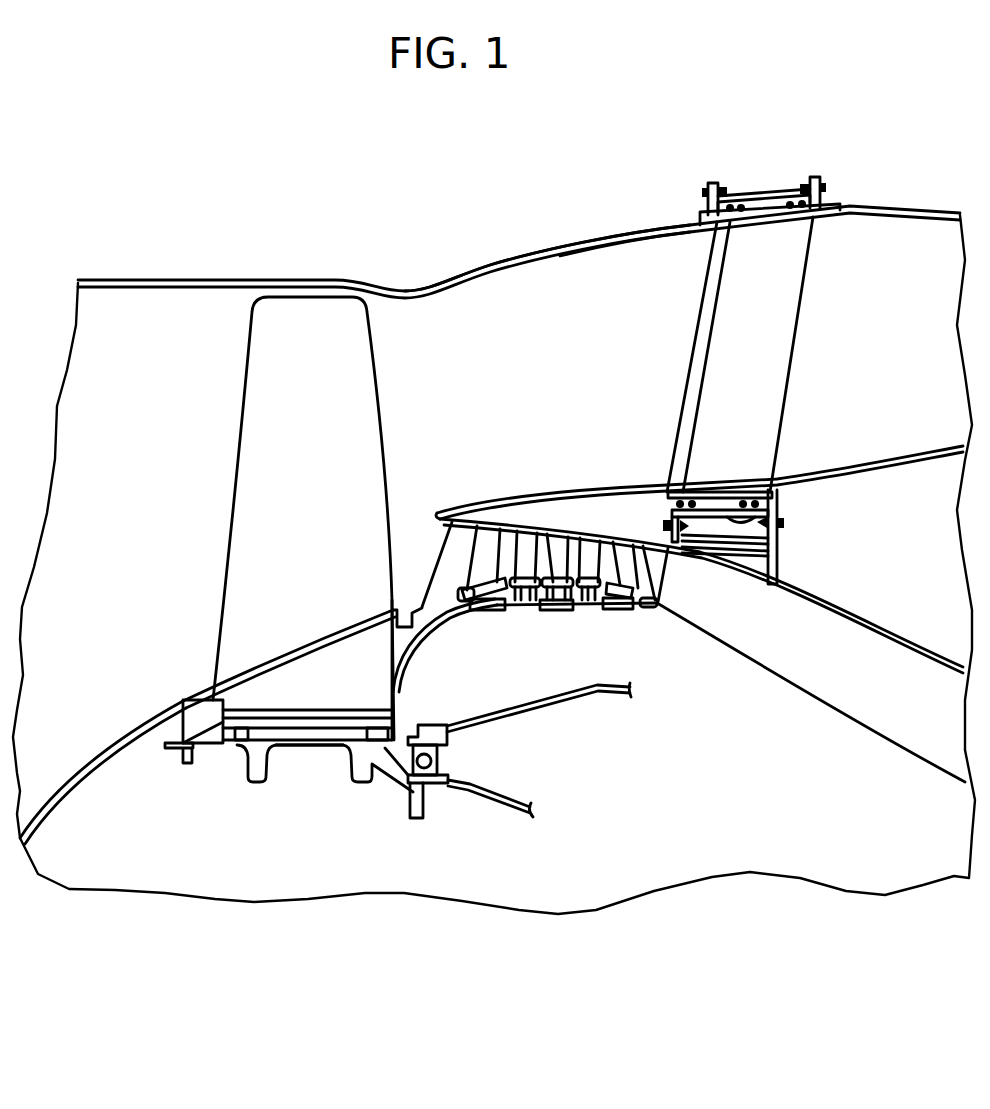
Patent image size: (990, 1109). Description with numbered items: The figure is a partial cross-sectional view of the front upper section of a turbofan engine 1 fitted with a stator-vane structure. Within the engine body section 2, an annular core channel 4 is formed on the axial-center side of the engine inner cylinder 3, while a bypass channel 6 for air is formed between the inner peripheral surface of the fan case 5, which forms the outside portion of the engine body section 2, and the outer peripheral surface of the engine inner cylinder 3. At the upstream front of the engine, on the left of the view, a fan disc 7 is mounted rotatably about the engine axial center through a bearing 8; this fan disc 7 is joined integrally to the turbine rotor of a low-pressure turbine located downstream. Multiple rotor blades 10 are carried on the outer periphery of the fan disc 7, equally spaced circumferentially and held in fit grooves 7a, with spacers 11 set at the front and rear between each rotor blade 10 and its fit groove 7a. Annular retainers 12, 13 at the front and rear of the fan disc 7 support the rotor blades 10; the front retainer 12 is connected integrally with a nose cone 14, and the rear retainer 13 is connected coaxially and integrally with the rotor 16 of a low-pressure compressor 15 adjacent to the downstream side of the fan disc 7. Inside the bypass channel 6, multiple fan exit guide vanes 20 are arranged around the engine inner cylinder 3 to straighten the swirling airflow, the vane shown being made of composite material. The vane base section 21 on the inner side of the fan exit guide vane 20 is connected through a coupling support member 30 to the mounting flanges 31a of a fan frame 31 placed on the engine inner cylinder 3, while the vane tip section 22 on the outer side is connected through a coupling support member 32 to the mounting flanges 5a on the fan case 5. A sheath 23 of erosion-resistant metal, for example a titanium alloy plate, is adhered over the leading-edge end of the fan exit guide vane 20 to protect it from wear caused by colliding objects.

The turbofan engine 1 is at (86, 237).
The engine body section 2 is at (162, 455).
The engine inner cylinder 3 is at (891, 452).
The annular core channel 4 is at (760, 653).
The fan case 5 is at (568, 248).
The mounting flange 5a is at (708, 207).
The bypass channel 6 is at (633, 283).
The fan disc 7 is at (253, 785).
The fit groove 7a is at (303, 733).
The bearing 8 is at (438, 760).
The rotor blade 10 is at (240, 372).
The spacer 11 is at (237, 733).
The annular retainer 12 is at (203, 730).
The annular retainer 13 is at (398, 710).
The nose cone 14 is at (78, 778).
The low-pressure compressor 15 is at (575, 543).
The rotor 16 is at (495, 612).
The fan exit guide vane 20 is at (768, 309).
The vane base section 21 is at (767, 513).
The vane tip section 22 is at (765, 196).
The sheath 23 is at (690, 362).
The coupling support member 30 is at (727, 500).
The fan frame 31 is at (775, 567).
The mounting flange 31a is at (667, 535).
The coupling support member 32 is at (770, 208).